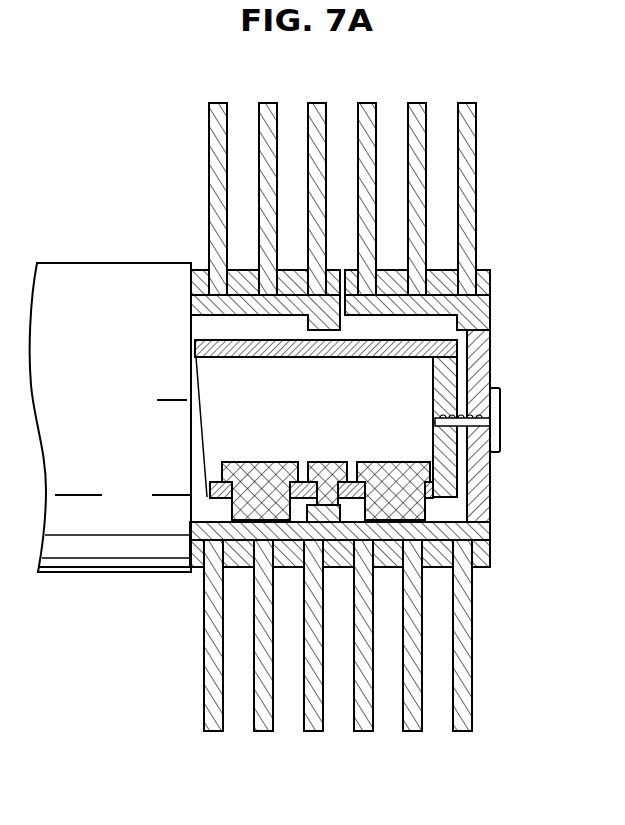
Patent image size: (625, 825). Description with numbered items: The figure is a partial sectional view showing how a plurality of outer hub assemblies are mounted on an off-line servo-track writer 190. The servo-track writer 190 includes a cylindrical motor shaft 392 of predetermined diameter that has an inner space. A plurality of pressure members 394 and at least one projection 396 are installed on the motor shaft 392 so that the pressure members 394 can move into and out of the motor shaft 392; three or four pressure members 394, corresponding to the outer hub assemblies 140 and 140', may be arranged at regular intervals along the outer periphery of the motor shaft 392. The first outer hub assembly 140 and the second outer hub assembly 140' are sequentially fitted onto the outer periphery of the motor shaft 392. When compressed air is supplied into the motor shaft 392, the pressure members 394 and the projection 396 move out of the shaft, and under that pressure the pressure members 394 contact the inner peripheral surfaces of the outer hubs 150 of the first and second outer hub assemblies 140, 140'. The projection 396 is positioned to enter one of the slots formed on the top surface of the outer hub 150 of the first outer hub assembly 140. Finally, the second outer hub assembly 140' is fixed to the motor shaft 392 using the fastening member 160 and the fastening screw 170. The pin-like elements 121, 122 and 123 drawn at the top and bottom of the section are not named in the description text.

The first heat dissipation pin 121 is at (207, 733).
The second heat dissipation pin 122 is at (262, 733).
The third heat dissipation pin 123 is at (313, 733).
The first outer hub assembly 140 is at (229, 179).
The second outer hub assembly 140' is at (453, 187).
The outer hub 150 is at (492, 315).
The fastening member 160 is at (492, 372).
The fastening screw 170 is at (500, 450).
The off-line servo-track writer 190 is at (93, 575).
The motor shaft 392 is at (420, 340).
The pressure member 394 is at (256, 462).
The projection 396 is at (330, 460).